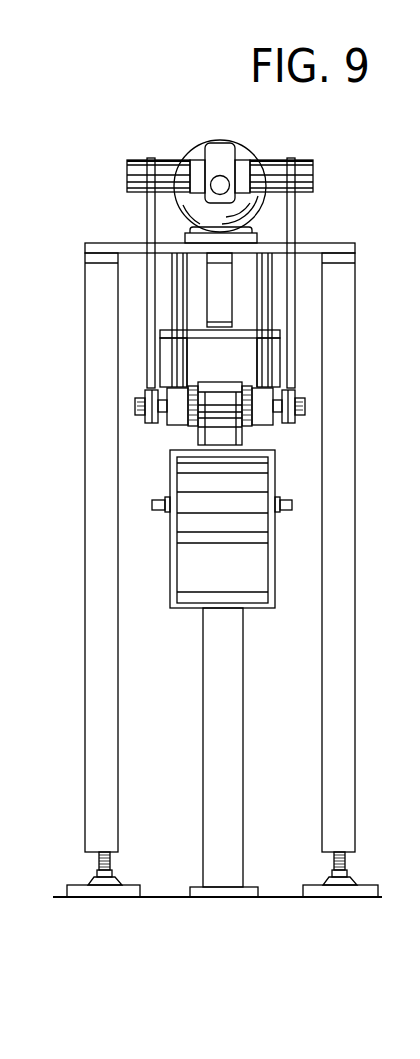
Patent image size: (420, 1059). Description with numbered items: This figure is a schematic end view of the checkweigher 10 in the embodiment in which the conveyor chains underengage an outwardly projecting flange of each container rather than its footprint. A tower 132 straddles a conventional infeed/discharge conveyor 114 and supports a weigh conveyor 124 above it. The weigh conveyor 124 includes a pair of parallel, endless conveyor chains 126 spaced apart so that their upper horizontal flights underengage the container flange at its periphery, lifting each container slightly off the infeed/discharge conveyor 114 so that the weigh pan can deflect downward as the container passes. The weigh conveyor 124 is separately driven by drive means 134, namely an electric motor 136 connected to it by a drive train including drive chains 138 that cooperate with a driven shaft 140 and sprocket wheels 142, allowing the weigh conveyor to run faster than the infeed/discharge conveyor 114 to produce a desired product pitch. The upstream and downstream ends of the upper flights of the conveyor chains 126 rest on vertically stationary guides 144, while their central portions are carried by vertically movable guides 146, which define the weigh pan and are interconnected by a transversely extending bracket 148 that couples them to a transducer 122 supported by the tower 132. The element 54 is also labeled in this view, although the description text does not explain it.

The checkweigher 10 is at (80, 142).
The support 54 is at (10, 243).
The infeed/discharge conveyor 114 is at (258, 522).
The transducer 122 is at (217, 297).
The weigh conveyor 124 is at (272, 432).
The conveyor chain 126 is at (197, 428).
The tower 132 is at (100, 282).
The drive means 134 is at (177, 131).
The electric motor 136 is at (243, 142).
The drive chain 138 is at (147, 208).
The driven shaft 140 is at (315, 167).
The sprocket wheel 142 is at (135, 410).
The vertically stationary guide 144 is at (180, 402).
The vertically movable guide 146 is at (167, 357).
The bracket 148 is at (243, 327).